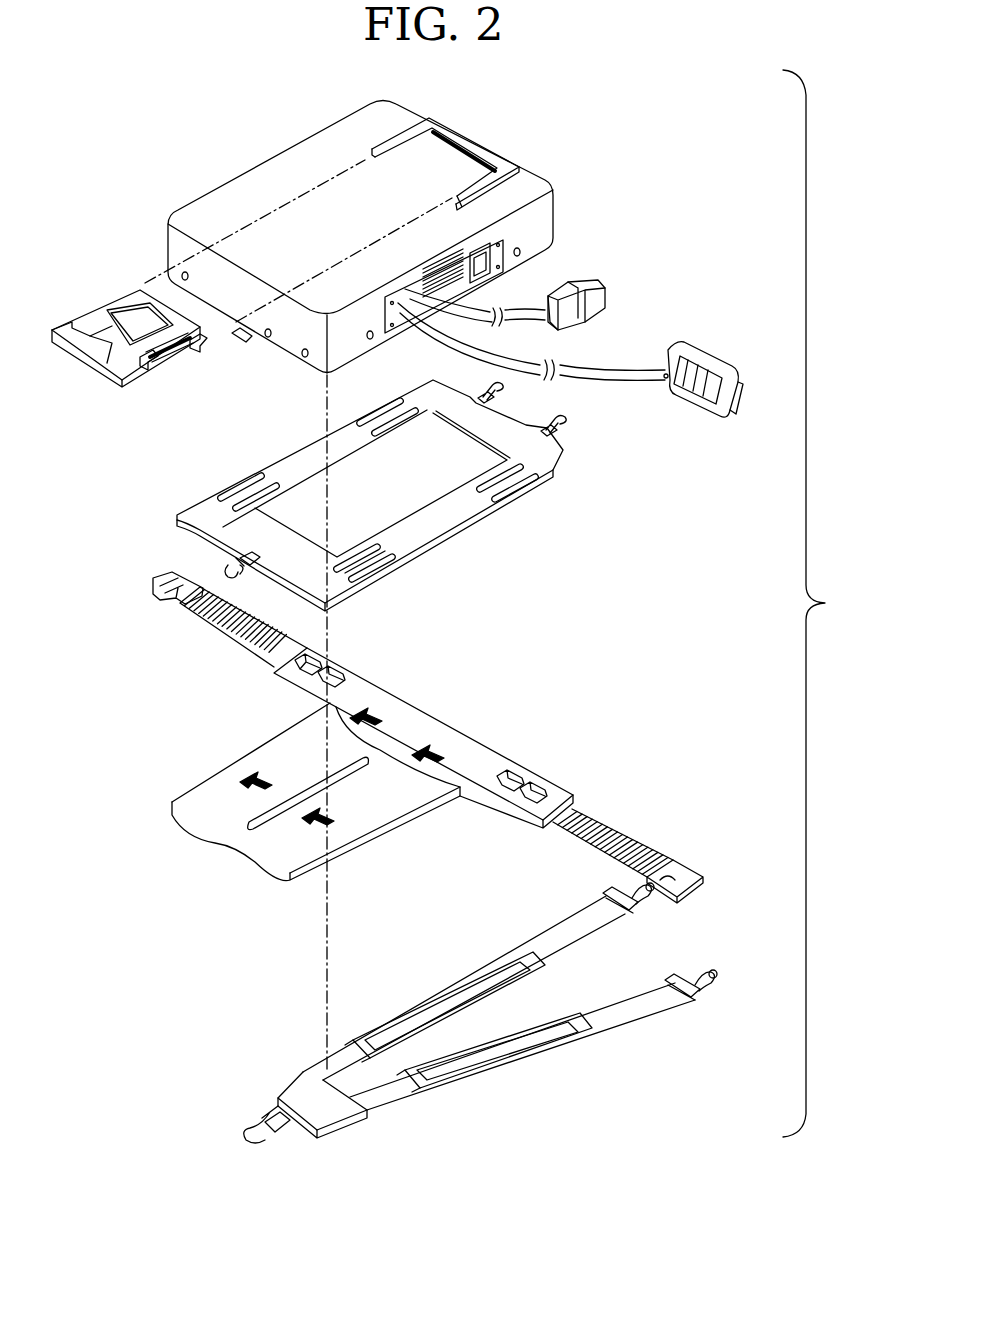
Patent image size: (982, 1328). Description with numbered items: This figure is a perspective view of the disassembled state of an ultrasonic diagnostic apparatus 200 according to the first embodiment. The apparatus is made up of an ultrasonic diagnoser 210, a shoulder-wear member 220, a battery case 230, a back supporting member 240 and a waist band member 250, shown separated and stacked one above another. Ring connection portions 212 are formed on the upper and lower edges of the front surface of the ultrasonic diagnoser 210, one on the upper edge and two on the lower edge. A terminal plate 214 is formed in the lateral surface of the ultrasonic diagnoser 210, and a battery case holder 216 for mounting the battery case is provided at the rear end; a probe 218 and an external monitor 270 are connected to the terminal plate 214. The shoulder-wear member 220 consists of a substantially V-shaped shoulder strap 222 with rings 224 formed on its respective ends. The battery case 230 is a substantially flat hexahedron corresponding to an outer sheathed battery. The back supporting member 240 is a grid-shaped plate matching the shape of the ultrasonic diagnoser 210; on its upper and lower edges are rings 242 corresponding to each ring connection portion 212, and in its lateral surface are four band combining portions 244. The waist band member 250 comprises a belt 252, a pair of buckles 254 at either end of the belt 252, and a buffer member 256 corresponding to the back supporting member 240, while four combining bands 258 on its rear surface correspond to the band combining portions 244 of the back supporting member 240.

The ultrasonic diagnostic apparatus 200 is at (826, 603).
The ultrasonic diagnoser 210 is at (575, 204).
The ring connection portions 212 is at (241, 342).
The terminal plate 214 is at (410, 328).
The battery case holder 216 is at (450, 139).
The probe 218 is at (612, 280).
The shoulder-wear member 220 is at (704, 972).
The shoulder strap 222 is at (383, 1100).
The rings 224 is at (240, 1140).
The battery case 230 is at (95, 298).
The back supporting member 240 is at (570, 447).
The rings 242 is at (228, 568).
The band combining portions 244 is at (375, 560).
The waist band member 250 is at (550, 755).
The belt 252 is at (640, 830).
The buckles 254 is at (696, 864).
The buffer member 256 is at (200, 790).
The combining bands 258 is at (250, 772).
The external monitor 270 is at (700, 358).